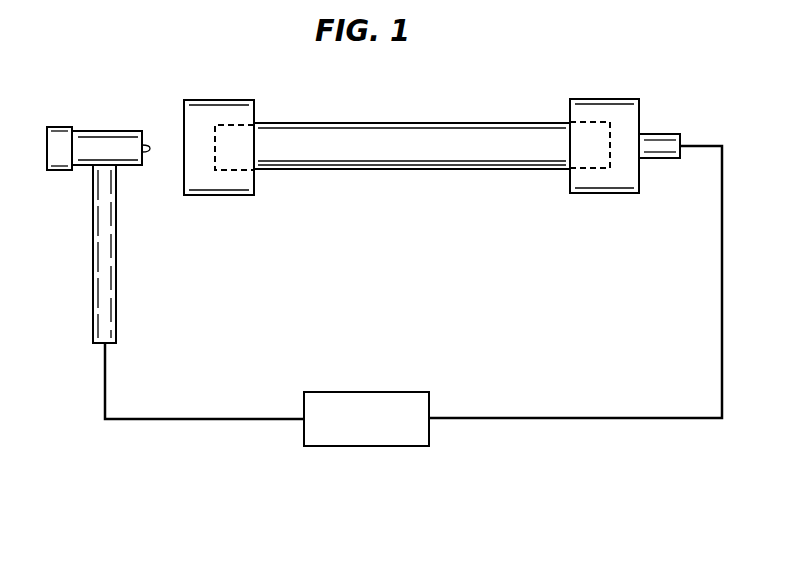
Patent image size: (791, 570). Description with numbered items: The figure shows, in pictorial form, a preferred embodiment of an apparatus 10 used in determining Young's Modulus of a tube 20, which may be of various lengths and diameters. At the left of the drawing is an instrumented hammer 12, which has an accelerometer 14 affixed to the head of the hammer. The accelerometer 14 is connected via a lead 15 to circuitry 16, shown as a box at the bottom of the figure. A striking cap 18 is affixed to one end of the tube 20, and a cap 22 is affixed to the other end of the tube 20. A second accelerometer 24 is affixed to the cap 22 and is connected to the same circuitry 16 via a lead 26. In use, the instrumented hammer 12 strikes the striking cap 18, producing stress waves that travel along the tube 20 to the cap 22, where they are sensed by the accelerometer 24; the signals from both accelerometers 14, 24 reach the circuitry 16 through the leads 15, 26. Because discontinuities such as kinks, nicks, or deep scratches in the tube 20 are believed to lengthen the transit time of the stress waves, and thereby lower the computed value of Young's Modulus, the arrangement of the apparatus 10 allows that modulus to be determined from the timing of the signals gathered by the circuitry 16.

The apparatus 10 is at (243, 342).
The instrumented hammer 12 is at (121, 131).
The accelerometer 14 is at (58, 127).
The lead 15 is at (180, 419).
The circuitry 16 is at (365, 392).
The striking cap 18 is at (232, 100).
The tube 20 is at (348, 123).
The cap 22 is at (597, 99).
The accelerometer 24 is at (665, 134).
The lead 26 is at (520, 418).